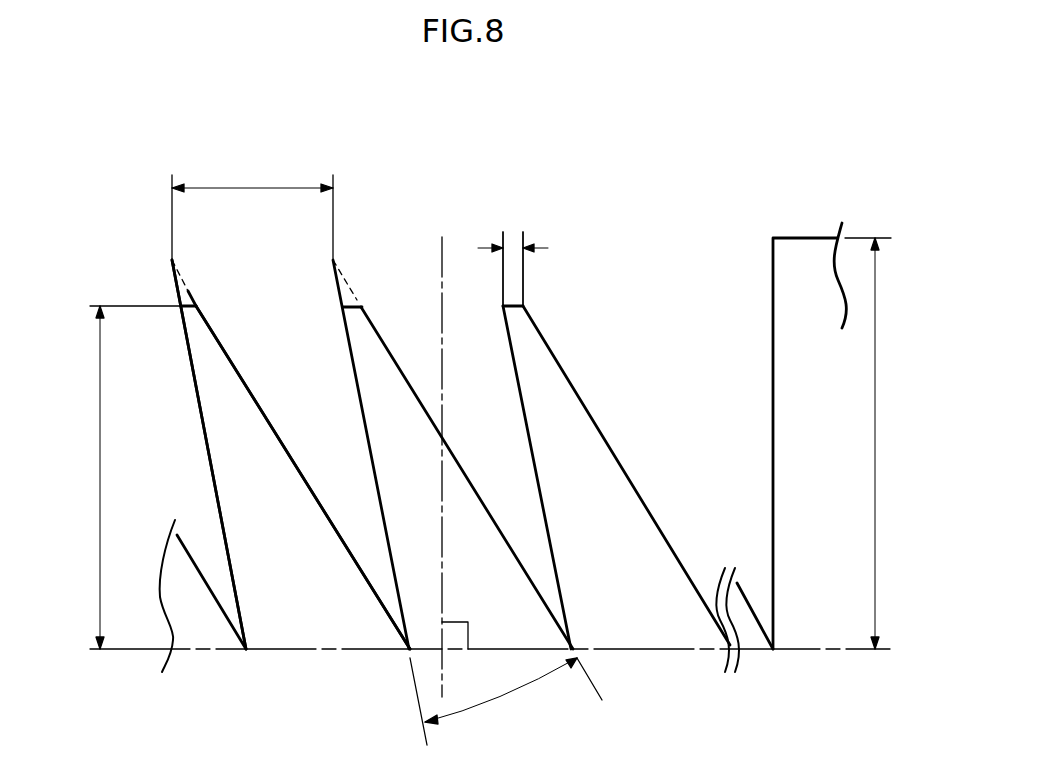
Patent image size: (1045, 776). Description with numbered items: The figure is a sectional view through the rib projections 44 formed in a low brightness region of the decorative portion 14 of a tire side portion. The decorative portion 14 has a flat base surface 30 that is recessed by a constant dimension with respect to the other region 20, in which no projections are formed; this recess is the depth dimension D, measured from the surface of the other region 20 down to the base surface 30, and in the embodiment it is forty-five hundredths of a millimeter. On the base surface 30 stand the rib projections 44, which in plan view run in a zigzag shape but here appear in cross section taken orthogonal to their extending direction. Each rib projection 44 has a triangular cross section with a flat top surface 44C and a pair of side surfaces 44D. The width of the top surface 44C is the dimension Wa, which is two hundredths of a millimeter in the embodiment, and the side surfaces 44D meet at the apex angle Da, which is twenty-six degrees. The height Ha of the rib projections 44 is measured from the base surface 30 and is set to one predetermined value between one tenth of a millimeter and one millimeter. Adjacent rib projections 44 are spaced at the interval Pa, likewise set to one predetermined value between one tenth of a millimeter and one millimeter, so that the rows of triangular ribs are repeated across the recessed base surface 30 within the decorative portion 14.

The decorative portion 14 is at (571, 240).
The other region 20 is at (808, 238).
The base surface 30 is at (663, 649).
The rib projections 44 is at (213, 329).
The top surface 44C is at (189, 292).
The side surfaces 44D is at (205, 443).
The interval Pa is at (262, 188).
The height Ha is at (99, 512).
The width of the top surface Wa is at (513, 248).
The depth dimension D is at (878, 434).
The apex angle Da is at (506, 701).